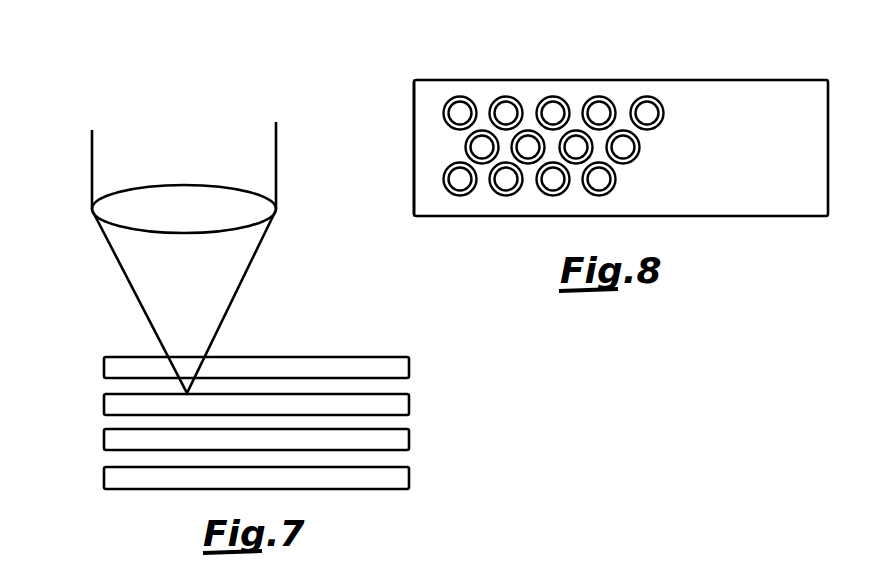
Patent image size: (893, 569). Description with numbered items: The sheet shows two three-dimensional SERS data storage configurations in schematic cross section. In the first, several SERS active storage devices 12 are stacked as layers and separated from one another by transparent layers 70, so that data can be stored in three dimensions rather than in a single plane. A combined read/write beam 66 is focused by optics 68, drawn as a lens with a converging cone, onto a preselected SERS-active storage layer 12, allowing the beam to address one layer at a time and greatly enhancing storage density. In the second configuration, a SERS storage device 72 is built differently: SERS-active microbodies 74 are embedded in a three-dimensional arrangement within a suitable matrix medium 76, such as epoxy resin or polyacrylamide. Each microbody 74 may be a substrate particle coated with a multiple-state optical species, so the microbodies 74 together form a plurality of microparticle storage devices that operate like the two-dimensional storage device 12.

In FIG. 7, the SERS active storage device 12 is at (413, 369).
In FIG. 7, the combined read/write beam 66 is at (108, 165).
In FIG. 7, the optics 68 is at (92, 210).
In FIG. 7, the transparent layers 70 is at (118, 388).
In FIG. 8, the SERS storage device 72 is at (556, 80).
In FIG. 8, the SERS-active microbodies 74 is at (444, 106).
In FIG. 8, the matrix medium 76 is at (414, 155).